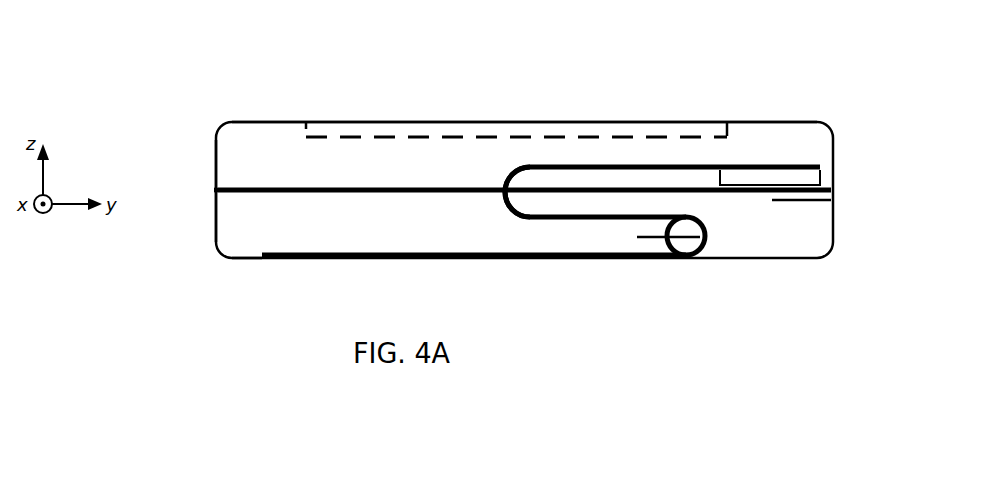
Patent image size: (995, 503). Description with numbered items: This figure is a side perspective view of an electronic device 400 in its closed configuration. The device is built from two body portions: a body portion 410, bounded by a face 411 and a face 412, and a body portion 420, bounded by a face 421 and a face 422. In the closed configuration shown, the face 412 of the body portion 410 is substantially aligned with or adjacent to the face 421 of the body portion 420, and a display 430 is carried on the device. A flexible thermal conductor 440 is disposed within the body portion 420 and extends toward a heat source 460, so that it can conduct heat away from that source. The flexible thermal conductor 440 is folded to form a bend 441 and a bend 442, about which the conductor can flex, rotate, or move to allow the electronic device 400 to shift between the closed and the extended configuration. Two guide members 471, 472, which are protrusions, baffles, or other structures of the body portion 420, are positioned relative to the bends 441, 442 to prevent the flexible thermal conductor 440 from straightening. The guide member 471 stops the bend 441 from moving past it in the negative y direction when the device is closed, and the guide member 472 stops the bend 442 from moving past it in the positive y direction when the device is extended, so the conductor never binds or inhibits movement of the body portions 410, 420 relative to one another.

The electronic device 400 is at (102, 62).
The body portion 410 is at (823, 122).
The face 411 is at (254, 112).
The face 412 is at (219, 175).
The face 421 is at (222, 203).
The face 422 is at (253, 270).
The body portion 420 is at (823, 258).
The display 430 is at (493, 115).
The flexible thermal conductor 440 is at (510, 260).
The bend 441 is at (726, 233).
The bend 442 is at (491, 210).
The heat source 460 is at (820, 176).
The guide member 471 is at (652, 240).
The guide member 472 is at (828, 203).